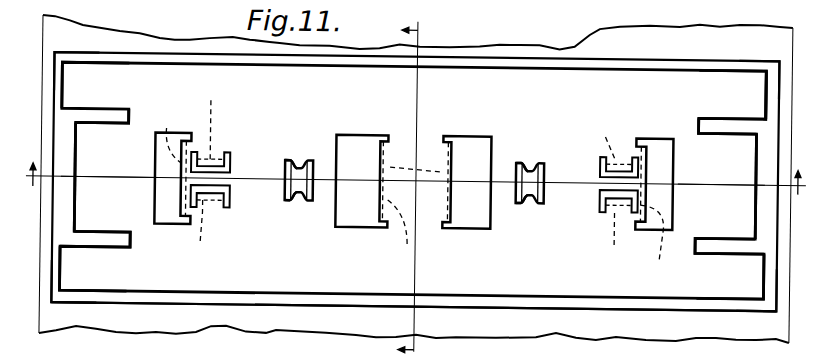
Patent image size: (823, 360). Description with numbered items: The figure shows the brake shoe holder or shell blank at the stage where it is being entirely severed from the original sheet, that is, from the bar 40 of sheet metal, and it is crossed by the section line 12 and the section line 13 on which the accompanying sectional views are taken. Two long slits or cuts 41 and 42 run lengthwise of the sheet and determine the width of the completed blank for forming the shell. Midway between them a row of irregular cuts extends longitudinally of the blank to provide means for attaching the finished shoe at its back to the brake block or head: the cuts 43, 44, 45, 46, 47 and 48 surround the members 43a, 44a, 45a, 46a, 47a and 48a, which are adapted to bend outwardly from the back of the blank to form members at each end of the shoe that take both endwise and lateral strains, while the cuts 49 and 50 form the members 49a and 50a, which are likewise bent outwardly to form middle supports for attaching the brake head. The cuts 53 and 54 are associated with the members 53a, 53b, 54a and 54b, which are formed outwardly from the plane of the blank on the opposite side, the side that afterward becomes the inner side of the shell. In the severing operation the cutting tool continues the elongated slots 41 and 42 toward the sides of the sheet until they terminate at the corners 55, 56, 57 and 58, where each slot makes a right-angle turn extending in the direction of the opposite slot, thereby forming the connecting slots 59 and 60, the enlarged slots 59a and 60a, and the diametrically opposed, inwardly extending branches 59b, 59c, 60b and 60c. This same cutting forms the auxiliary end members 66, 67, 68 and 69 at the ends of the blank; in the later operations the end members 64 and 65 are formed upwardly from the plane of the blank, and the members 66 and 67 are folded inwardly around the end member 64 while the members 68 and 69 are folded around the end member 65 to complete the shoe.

The section line 12— 12 is at (416, 172).
The section line 13— 13 is at (435, 18).
The bar of sheet metal 40 is at (172, 40).
The slit or cut 41 is at (670, 48).
The slit or cut 42 is at (283, 281).
The cut 43 is at (172, 201).
The member 43a is at (165, 133).
The cut 44 is at (662, 152).
The member 44a is at (665, 280).
The cut 45 is at (602, 160).
The member 45a is at (597, 139).
The cut 46 is at (608, 190).
The member 46a is at (613, 242).
The cut 47 is at (220, 195).
The member 47a is at (211, 226).
The cut 48 is at (212, 163).
The member 48a is at (214, 135).
The cut 49 is at (463, 148).
The member 49a is at (415, 158).
The cut 50 is at (353, 149).
The member 50a is at (406, 233).
The slit or cut 53 is at (298, 177).
The member 53a is at (300, 197).
The member 53b is at (300, 160).
The slit or cut 54 is at (523, 184).
The member 54a is at (533, 196).
The member 54b is at (532, 161).
The corner 55 is at (57, 56).
The corner 56 is at (58, 292).
The corner 57 is at (772, 293).
The plate corner 58 is at (773, 56).
The connecting slot 59 is at (775, 92).
The enlarged slot 59a is at (766, 185).
The inwardly extending branch 59b is at (728, 116).
The inwardly extending branch 59c is at (731, 234).
The connecting slot 60 is at (60, 92).
The enlarged slot 60a is at (65, 152).
The inwardly extending branch 60b is at (137, 109).
The inwardly extending branch 60c is at (97, 241).
The end member 64 is at (131, 177).
The end member 65 is at (721, 180).
The auxiliary end member 66 is at (83, 84).
The auxiliary end member 67 is at (95, 276).
The auxiliary end member 68 is at (757, 81).
The auxiliary end member 69 is at (723, 271).